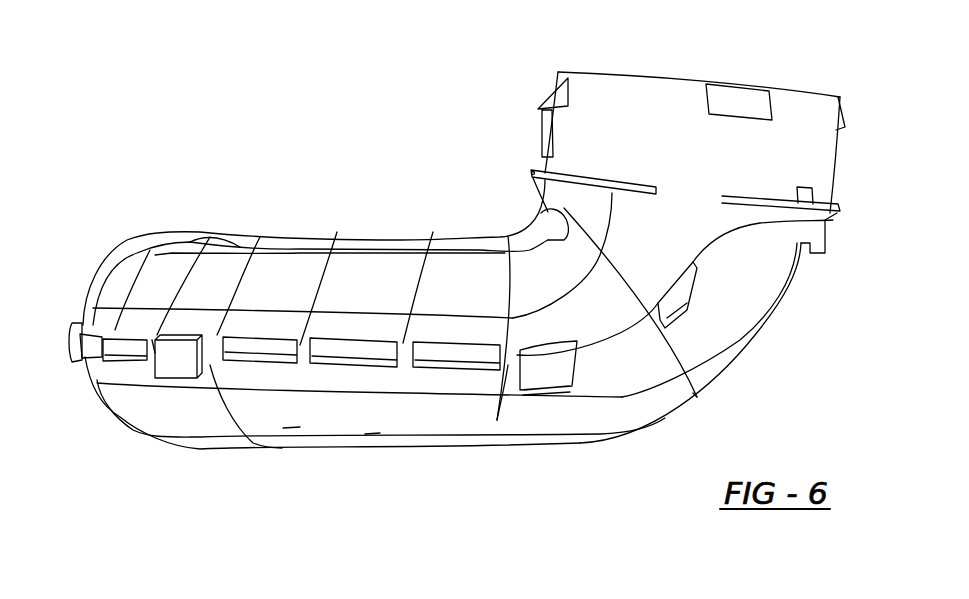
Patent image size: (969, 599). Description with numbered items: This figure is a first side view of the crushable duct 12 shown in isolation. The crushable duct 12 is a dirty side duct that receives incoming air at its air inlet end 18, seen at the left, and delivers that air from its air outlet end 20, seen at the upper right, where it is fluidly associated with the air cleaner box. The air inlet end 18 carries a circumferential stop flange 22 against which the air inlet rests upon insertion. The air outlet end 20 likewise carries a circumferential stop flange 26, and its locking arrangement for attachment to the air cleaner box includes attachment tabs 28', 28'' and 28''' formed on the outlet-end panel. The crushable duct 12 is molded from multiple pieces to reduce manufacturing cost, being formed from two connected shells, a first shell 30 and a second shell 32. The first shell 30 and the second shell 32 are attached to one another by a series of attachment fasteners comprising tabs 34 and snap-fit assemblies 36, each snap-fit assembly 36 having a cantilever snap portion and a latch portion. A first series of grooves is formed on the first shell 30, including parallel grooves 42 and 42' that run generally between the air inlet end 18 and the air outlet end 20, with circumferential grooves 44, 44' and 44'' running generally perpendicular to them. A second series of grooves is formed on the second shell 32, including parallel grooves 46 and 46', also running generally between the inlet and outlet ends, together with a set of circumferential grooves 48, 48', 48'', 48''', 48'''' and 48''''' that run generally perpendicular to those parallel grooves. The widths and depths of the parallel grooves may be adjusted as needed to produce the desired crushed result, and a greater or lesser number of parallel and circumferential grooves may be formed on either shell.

The crushable duct 12 is at (90, 432).
The air inlet end 18 is at (122, 252).
The air outlet end 20 is at (807, 95).
The circumferential stop flange 22 is at (213, 237).
The circumferential stop flange 26 is at (533, 173).
The attachment tab 28' is at (853, 141).
The attachment tab 28'' is at (745, 61).
The attachment tab 28''' is at (525, 95).
The first shell 30 is at (737, 347).
The second shell 32 is at (323, 240).
The tab 34 is at (253, 335).
The snap-fit assembly 36 is at (548, 372).
The parallel groove 42 is at (288, 448).
The parallel groove 42' is at (357, 473).
The circumferential groove 44 is at (246, 439).
The circumferential groove 44' is at (464, 437).
The circumferential groove 44'' is at (664, 446).
The parallel groove 46 is at (479, 328).
The parallel groove 46' is at (396, 287).
The circumferential groove 48 is at (98, 272).
The circumferential groove 48' is at (146, 242).
The circumferential groove 48'' is at (237, 251).
The circumferential groove 48''' is at (325, 251).
The circumferential groove 48'''' is at (382, 275).
The circumferential groove 48''''' is at (524, 197).